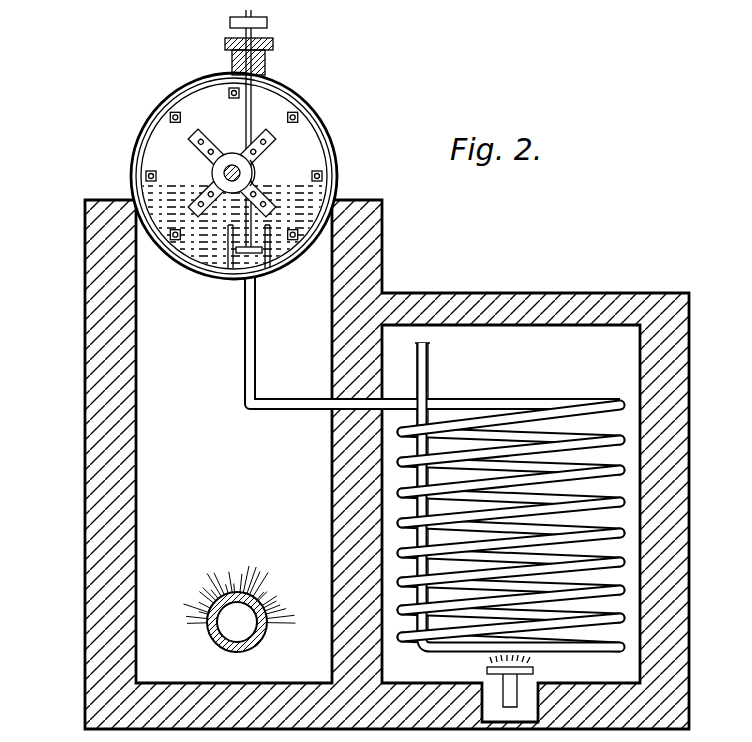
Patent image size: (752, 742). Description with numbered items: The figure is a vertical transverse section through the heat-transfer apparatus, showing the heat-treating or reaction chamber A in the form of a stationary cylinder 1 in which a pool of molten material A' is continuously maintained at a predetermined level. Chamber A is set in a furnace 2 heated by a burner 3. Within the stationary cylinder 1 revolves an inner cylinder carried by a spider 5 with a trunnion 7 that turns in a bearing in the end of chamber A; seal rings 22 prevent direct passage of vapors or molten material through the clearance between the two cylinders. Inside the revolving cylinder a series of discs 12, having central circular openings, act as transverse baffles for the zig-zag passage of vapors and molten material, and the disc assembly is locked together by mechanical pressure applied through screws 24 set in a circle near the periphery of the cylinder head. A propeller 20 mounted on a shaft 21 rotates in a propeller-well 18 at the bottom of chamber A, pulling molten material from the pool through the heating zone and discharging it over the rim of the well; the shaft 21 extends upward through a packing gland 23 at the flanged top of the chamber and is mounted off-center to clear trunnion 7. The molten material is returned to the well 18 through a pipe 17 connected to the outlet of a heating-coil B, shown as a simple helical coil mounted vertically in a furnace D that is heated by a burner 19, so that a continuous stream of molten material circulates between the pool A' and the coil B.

The furnace 2 is at (85, 400).
The stationary cylinder 1 is at (281, 86).
The seal rings 22 is at (305, 88).
The discs 12 is at (320, 138).
The screws 24 is at (318, 114).
The packing gland 23 is at (228, 43).
The trunnion 7 is at (235, 152).
The spider 5 is at (203, 148).
The propeller shaft 21 is at (254, 172).
The propeller-well 18 is at (228, 247).
The propeller 20 is at (233, 273).
The pipe 17 is at (266, 410).
The burner 3 is at (257, 643).
The burner 19 is at (535, 670).
The heating-coil B is at (522, 407).
The furnace D is at (447, 491).
The reaction chamber A is at (194, 61).
The pool of molten material A' is at (260, 215).